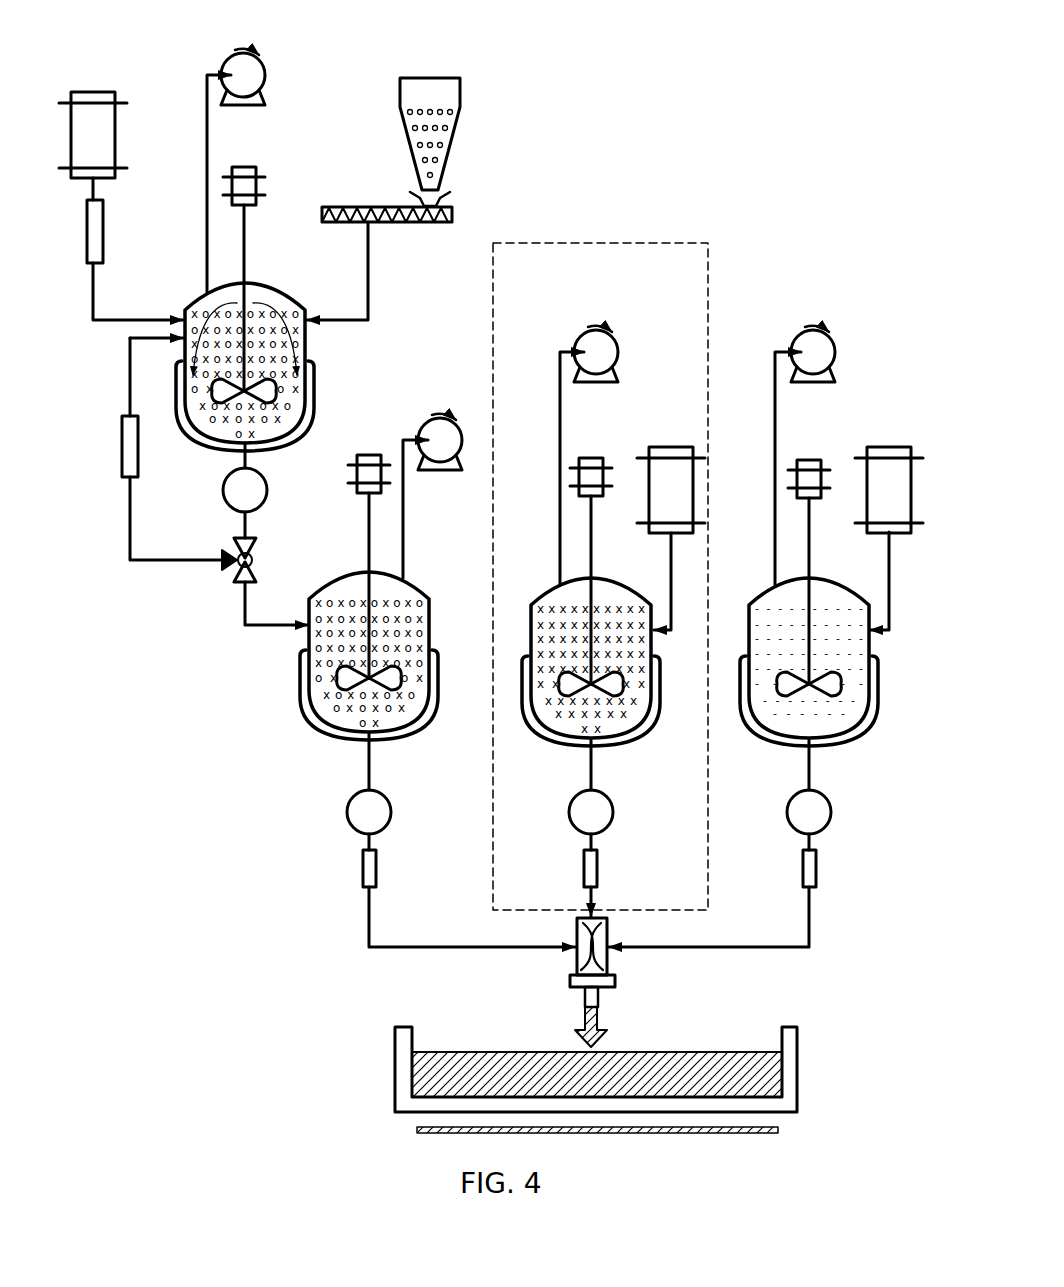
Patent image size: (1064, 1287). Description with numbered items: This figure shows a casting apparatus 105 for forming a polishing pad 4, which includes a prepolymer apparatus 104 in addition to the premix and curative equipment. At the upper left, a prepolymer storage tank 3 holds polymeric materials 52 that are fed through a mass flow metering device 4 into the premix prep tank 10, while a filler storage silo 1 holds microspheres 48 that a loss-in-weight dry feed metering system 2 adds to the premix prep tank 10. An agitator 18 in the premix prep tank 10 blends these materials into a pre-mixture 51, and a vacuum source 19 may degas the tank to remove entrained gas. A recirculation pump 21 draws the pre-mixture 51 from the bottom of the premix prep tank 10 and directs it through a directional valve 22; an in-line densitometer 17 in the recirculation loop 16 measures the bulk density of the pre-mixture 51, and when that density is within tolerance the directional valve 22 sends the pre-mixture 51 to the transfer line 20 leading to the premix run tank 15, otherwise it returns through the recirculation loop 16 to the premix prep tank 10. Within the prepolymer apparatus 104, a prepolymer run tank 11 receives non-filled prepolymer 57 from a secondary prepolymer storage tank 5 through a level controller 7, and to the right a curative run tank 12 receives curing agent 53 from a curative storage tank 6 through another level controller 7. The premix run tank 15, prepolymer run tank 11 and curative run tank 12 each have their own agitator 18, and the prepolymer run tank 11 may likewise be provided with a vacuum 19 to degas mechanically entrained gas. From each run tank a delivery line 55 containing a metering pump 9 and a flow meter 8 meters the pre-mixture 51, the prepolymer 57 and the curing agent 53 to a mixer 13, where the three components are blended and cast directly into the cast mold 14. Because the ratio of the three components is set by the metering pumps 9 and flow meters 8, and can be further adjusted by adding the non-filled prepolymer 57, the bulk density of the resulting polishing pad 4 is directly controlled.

The filler storage silo 1 is at (393, 104).
The dry feed metering system 2 is at (362, 210).
The prepolymer storage tank 3 is at (118, 92).
The mass flow metering device 4 is at (92, 248).
The secondary prepolymer storage tank 5 is at (645, 450).
The curative storage tank 6 is at (857, 450).
The level controller 7 is at (665, 582).
The flow meter 8 is at (357, 867).
The metering pump 9 is at (358, 812).
The premix prep tank 10 is at (213, 447).
The prepolymer run tank 11 is at (560, 743).
The curative run tank 12 is at (780, 742).
The mixer 13 is at (580, 960).
The cast mold 14 is at (403, 1055).
The premix run tank 15 is at (335, 738).
The recirculation loop 16 is at (118, 391).
The in-line densitometer 17 is at (128, 458).
The agitator 18 is at (250, 297).
The vacuum source 19 is at (248, 63).
The transfer line 20 is at (237, 617).
The recirculation pump 21 is at (240, 492).
The directional valve 22 is at (243, 560).
The microspheres 48 is at (433, 148).
The pre-mixture 51 is at (252, 417).
The polymeric materials 52 is at (95, 148).
The curing agent 53 is at (880, 478).
The delivery line 55 is at (358, 922).
The non-filled prepolymer 57 is at (655, 483).
The prepolymer apparatus 104 is at (595, 265).
The casting apparatus 105 is at (773, 137).